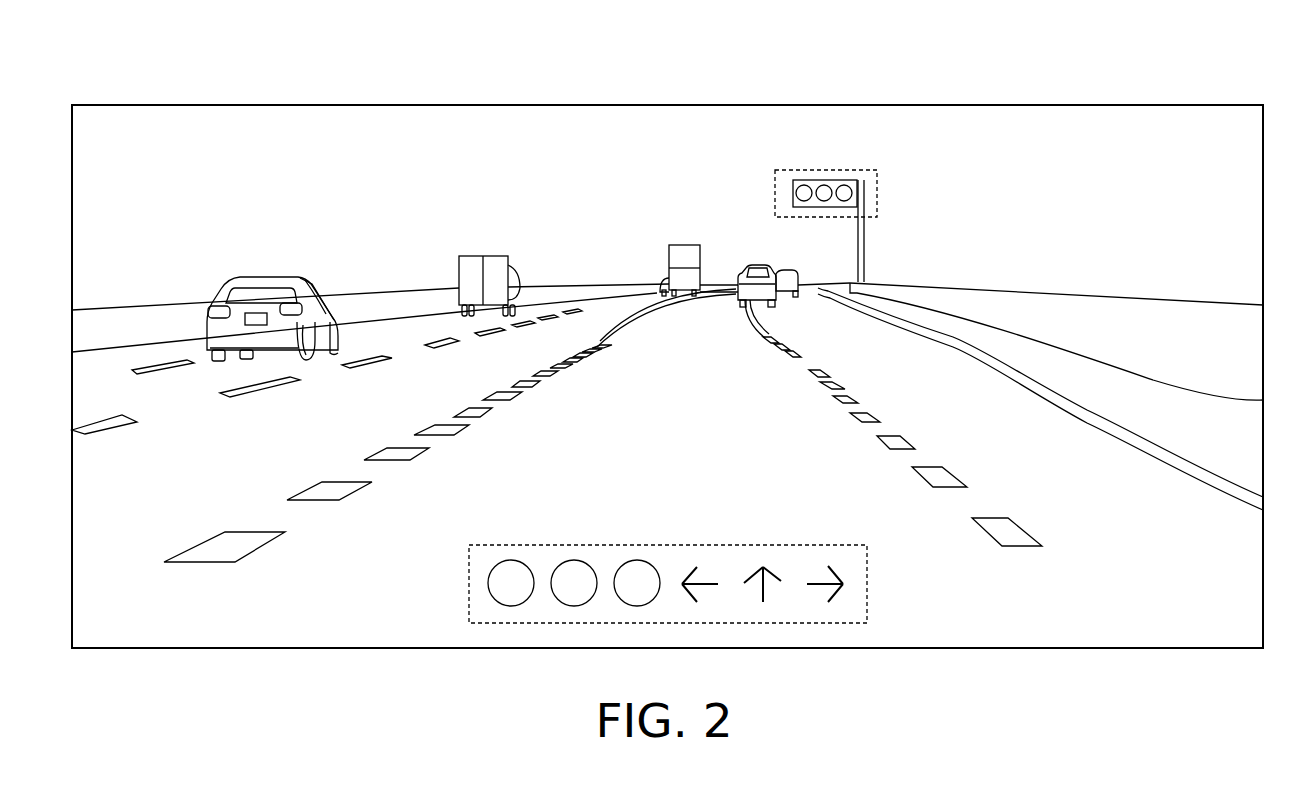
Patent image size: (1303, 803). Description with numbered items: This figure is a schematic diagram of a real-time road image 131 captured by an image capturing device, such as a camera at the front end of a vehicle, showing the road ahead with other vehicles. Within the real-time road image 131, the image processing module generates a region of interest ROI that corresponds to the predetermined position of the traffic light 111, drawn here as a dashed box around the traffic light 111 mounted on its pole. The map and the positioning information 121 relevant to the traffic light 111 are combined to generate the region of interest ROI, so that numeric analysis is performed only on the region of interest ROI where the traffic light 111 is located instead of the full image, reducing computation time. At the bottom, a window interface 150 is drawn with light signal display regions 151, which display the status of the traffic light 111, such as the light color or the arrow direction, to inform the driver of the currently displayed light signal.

The real-time road image 131 is at (276, 105).
The traffic light 111 is at (838, 168).
The positioning information 121 is at (877, 190).
The region of interest ROI is at (878, 214).
The window interface 150 is at (668, 539).
The light signal display region 151 is at (555, 552).